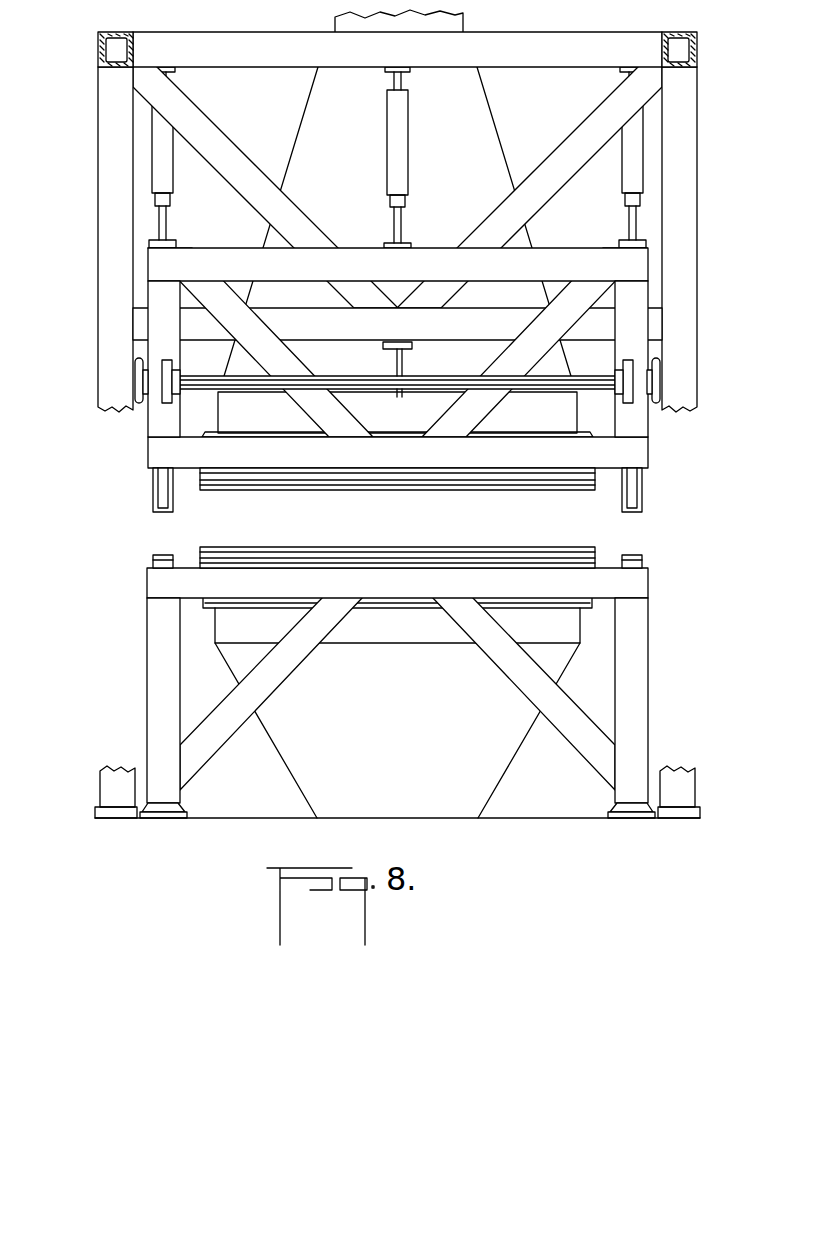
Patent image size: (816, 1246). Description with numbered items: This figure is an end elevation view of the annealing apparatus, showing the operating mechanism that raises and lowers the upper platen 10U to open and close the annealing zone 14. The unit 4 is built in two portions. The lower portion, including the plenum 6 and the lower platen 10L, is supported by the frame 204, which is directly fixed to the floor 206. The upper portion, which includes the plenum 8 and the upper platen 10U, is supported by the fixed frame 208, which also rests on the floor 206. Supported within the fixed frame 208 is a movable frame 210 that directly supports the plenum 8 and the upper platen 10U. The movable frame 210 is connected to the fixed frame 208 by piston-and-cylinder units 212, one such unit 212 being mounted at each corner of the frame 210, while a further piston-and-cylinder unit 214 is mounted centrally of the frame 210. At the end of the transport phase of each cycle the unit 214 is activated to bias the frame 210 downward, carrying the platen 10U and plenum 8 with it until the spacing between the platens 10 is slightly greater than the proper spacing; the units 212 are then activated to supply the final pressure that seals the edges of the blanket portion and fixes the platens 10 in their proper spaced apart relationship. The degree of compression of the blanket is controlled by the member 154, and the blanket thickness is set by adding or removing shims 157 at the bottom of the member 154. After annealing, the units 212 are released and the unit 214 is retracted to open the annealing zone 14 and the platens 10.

The unit 4 is at (128, 484).
The plenum 6 is at (400, 704).
The plenum 8 is at (455, 176).
The platens 10 is at (407, 518).
The upper platen 10U is at (545, 492).
The lower platen 10L is at (530, 551).
The annealing zone 14 is at (410, 532).
The member 154 is at (175, 507).
The shims 157 is at (153, 562).
The frame 204 is at (158, 660).
The floor 206 is at (221, 820).
The fixed frame 208 is at (543, 43).
The movable frame 210 is at (202, 258).
The piston-and-cylinder units 212 is at (173, 182).
The piston-and-cylinder unit 214 is at (388, 128).